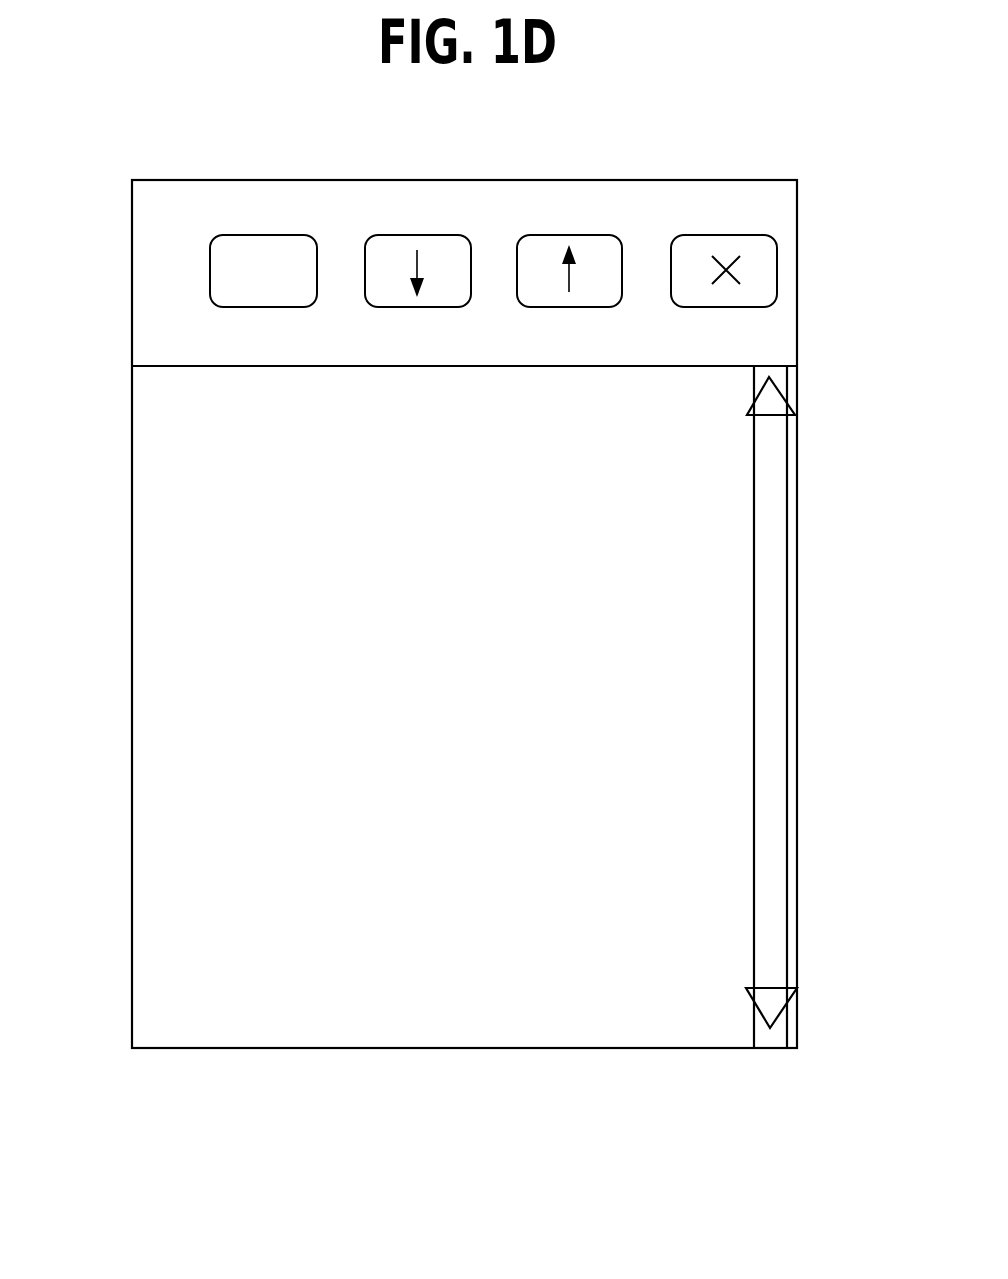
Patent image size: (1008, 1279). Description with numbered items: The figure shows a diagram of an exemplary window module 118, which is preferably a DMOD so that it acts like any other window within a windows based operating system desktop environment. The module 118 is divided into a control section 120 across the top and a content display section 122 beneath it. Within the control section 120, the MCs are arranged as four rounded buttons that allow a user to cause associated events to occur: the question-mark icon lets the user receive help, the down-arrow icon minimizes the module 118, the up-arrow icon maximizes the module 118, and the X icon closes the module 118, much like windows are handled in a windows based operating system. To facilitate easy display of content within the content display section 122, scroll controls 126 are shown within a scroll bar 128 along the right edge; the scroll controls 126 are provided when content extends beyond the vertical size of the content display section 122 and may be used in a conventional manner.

The window module 118 is at (168, 180).
The control section 120 is at (789, 323).
The element MCs is at (777, 200).
The content display section 122 is at (168, 807).
The scroll controls 126 is at (797, 995).
The scroll bar 128 is at (770, 830).